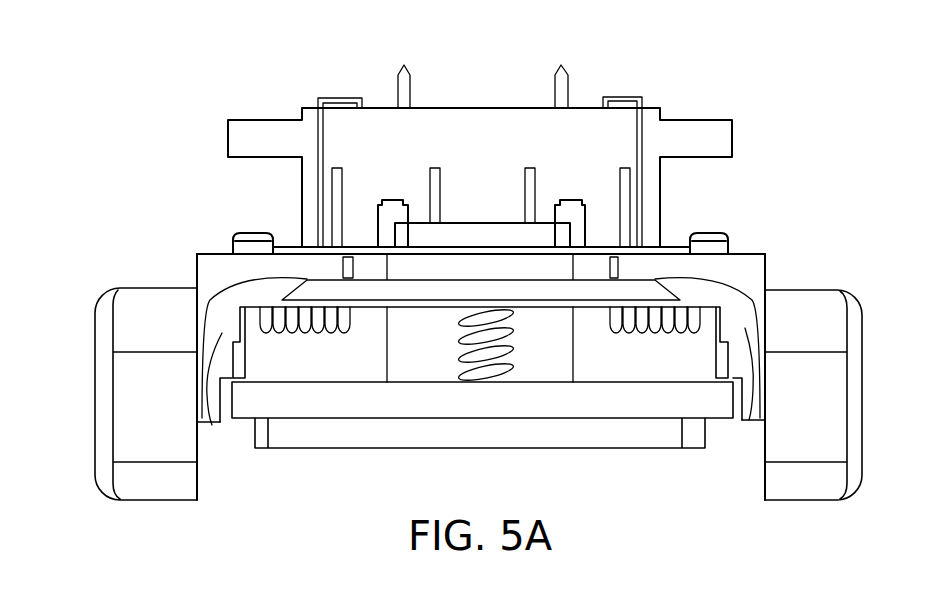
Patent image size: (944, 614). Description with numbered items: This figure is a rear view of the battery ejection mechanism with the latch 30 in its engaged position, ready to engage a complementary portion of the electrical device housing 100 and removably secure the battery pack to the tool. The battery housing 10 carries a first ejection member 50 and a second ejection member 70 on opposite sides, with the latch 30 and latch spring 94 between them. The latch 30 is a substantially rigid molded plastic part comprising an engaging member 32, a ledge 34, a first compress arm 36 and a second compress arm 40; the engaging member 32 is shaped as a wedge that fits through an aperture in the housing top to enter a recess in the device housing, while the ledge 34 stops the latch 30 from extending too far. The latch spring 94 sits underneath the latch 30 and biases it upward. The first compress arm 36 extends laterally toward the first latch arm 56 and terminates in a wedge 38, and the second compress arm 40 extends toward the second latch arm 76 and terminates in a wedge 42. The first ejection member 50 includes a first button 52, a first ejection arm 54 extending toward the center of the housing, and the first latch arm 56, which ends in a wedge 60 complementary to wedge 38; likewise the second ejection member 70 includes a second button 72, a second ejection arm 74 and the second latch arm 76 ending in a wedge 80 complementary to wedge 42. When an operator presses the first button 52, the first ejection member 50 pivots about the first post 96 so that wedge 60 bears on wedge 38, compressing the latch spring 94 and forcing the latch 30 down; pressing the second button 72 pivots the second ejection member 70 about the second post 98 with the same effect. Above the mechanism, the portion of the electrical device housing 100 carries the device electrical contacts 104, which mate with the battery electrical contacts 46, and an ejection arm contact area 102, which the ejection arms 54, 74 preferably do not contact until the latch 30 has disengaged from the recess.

The battery housing 10 is at (433, 430).
The latch 30 is at (557, 297).
The engaging member 32 is at (452, 232).
The ledge 34 is at (525, 272).
The first compress arm 36 is at (367, 300).
The wedge 38 is at (307, 337).
The second compress arm 40 is at (635, 297).
The wedge 42 is at (692, 330).
The battery electrical contacts 46 is at (627, 167).
The first ejection member 50 is at (213, 252).
The first button 52 is at (93, 385).
The first ejection arm 54 is at (362, 247).
The first latch arm 56 is at (215, 425).
The wedge 60 is at (225, 270).
The second ejection member 70 is at (757, 240).
The second button 72 is at (828, 313).
The second ejection arm 74 is at (664, 247).
The second latch arm 76 is at (747, 425).
The wedge 80 is at (700, 280).
The latch spring 94 is at (493, 373).
The first post 96 is at (235, 243).
The second post 98 is at (707, 233).
The electrical device housing 100 is at (652, 107).
The ejection arm contact area 102 is at (503, 222).
The device electrical contacts 104 is at (393, 200).